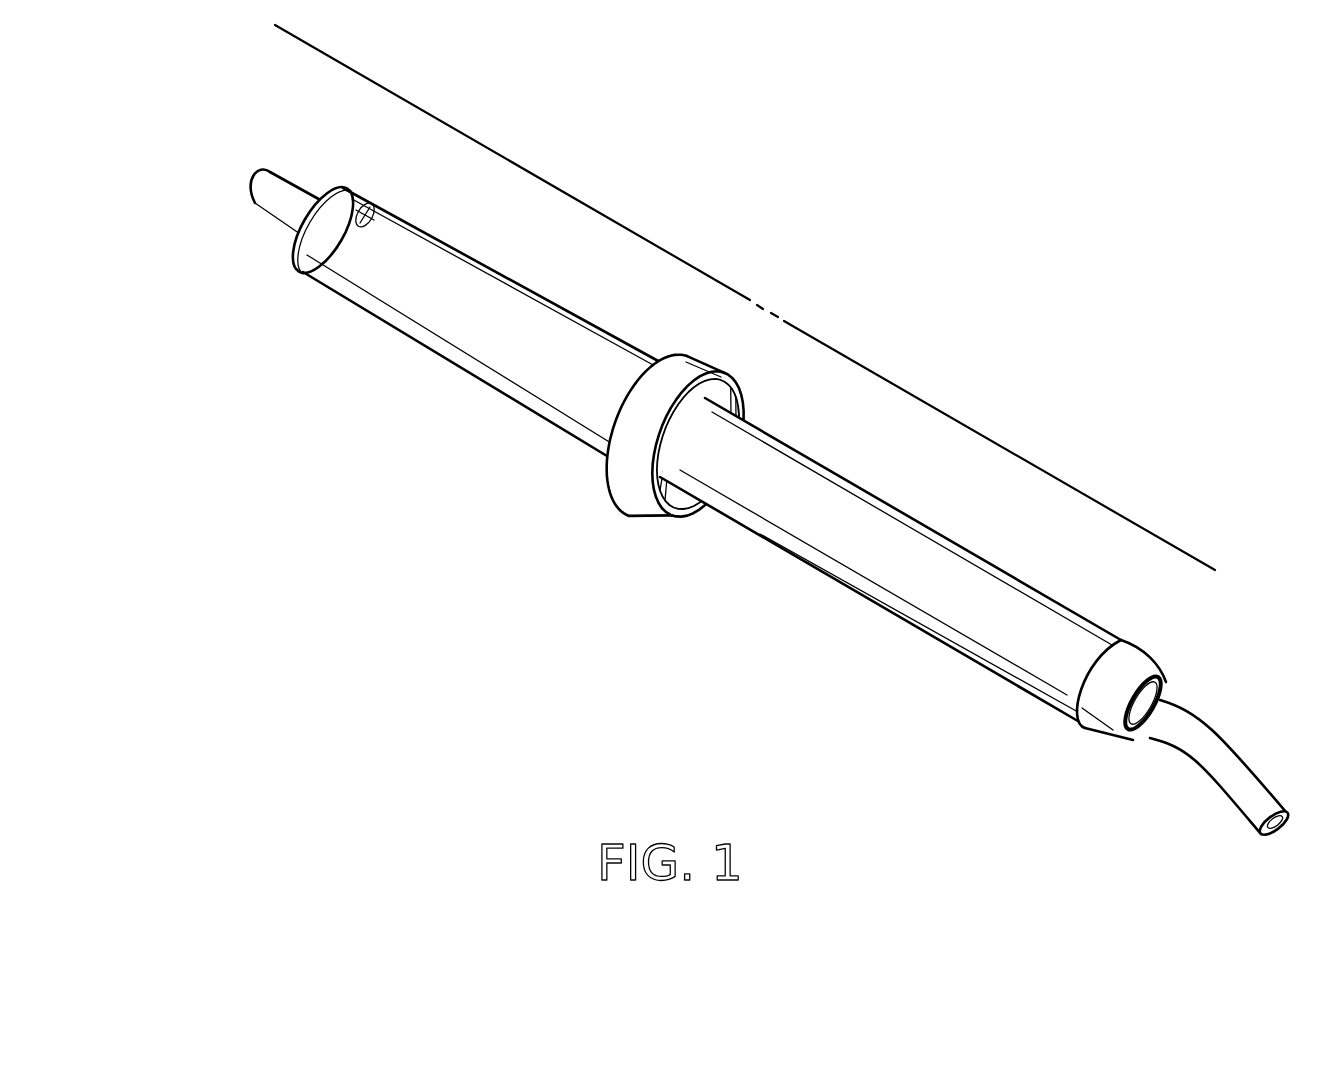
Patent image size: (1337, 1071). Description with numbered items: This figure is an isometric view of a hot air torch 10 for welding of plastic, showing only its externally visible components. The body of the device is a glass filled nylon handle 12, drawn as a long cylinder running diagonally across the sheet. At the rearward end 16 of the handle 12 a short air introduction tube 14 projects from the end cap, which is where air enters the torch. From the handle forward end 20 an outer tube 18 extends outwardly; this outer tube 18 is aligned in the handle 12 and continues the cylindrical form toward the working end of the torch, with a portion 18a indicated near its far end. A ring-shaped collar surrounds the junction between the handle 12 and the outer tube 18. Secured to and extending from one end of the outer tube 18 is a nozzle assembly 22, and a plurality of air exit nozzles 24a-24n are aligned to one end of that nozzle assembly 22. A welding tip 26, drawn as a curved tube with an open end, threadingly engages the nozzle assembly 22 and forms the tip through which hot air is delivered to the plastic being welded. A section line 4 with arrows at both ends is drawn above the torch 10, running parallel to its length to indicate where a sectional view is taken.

The section line 4- 4 is at (1215, 635).
The hot air torch 10 is at (749, 478).
The handle 12 is at (481, 312).
The air introduction tube 14 is at (283, 199).
The rearward end 16 is at (345, 203).
The outer tube 18 is at (865, 562).
The barrel end portion 18a is at (1063, 687).
The handle forward end 20 is at (632, 492).
The nozzle assembly 22 is at (1103, 722).
The air exit nozzles 24a-24n is at (1128, 758).
The welding tip 26 is at (1235, 768).